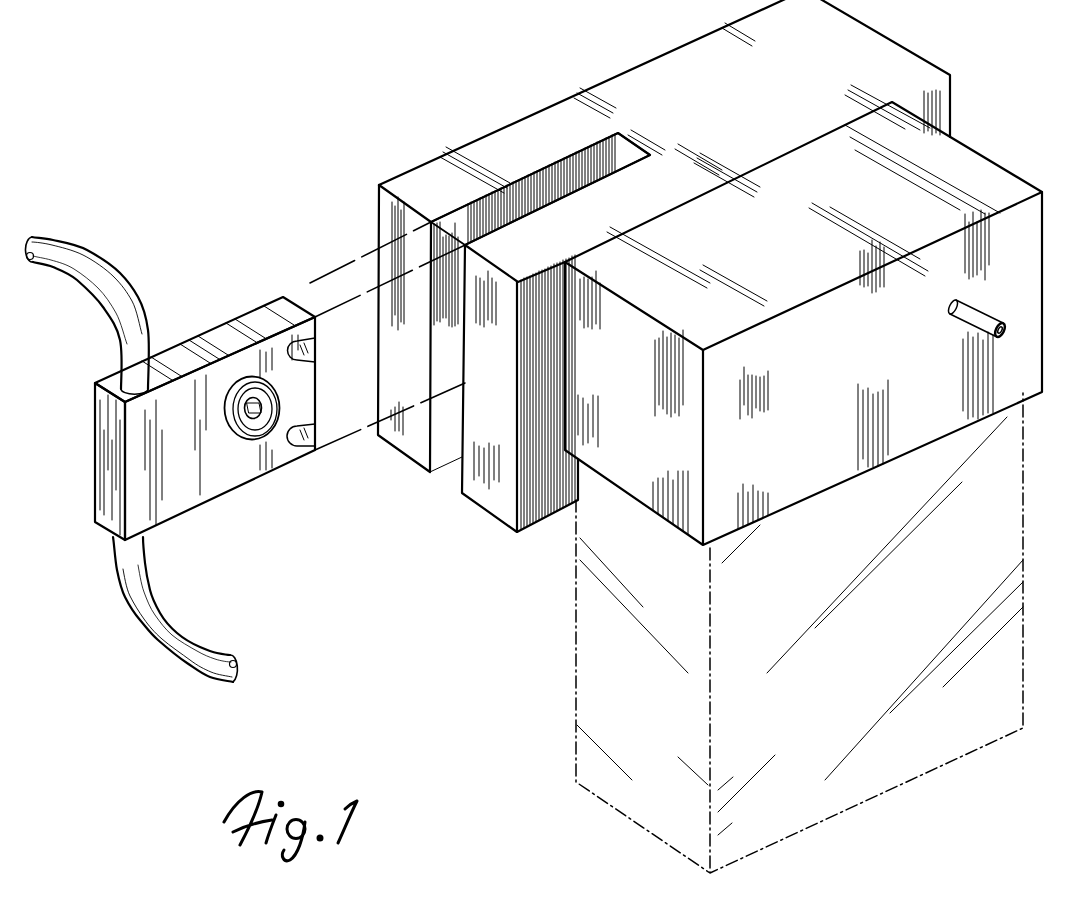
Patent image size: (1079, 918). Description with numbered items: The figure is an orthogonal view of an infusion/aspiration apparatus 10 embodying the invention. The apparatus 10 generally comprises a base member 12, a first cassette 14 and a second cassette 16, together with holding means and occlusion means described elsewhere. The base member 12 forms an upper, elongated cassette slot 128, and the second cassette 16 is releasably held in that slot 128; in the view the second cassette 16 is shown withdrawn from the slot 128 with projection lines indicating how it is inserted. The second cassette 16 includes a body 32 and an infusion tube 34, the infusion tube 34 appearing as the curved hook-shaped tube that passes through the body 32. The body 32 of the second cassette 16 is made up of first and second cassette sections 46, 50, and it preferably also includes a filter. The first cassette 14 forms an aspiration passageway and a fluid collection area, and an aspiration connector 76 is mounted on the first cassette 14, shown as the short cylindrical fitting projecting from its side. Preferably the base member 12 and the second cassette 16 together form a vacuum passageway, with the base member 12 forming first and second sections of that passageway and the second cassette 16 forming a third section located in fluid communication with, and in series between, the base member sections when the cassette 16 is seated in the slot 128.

The infusion/aspiration apparatus 10 is at (146, 102).
The base member 12 is at (870, 50).
The first cassette 14 is at (992, 137).
The second cassette 16 is at (185, 240).
The body 32 is at (197, 330).
The infusion tube 34 is at (95, 290).
The first cassette section 46 is at (98, 443).
The second cassette section 50 is at (217, 480).
The aspiration connector 76 is at (962, 320).
The cassette slot 128 is at (557, 180).